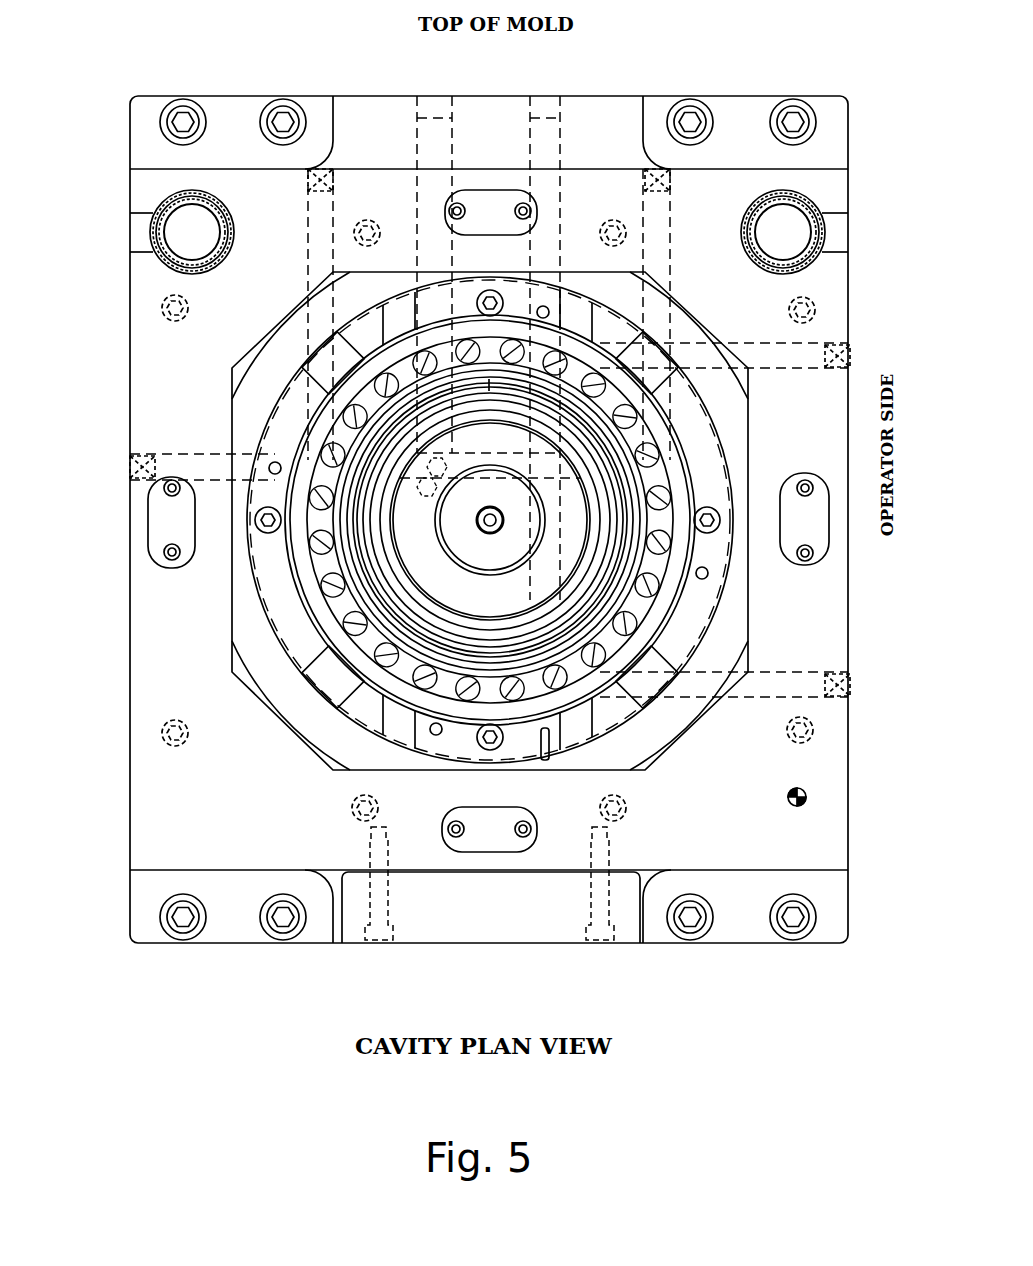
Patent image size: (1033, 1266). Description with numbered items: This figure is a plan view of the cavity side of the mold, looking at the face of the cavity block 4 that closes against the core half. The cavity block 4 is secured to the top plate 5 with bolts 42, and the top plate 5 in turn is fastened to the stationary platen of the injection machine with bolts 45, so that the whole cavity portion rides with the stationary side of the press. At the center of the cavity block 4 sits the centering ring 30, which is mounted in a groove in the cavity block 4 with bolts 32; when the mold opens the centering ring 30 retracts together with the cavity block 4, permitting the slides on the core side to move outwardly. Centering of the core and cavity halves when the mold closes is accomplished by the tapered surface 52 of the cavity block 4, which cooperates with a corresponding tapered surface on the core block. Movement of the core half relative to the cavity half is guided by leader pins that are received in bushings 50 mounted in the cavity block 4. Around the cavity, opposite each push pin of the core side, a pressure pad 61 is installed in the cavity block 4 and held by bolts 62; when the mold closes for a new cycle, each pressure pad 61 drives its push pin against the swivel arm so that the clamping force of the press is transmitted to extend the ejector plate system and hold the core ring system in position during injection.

The cavity block 4 is at (752, 845).
The top plate 5 is at (728, 900).
The centering ring 30 is at (685, 632).
The bolts 32 is at (505, 742).
The bolts 42 is at (615, 820).
The bolts 45 is at (690, 912).
The bushing 50 is at (163, 207).
The tapered surface 52 is at (265, 705).
The pressure pad 61 is at (478, 200).
The bolts 62 is at (453, 196).